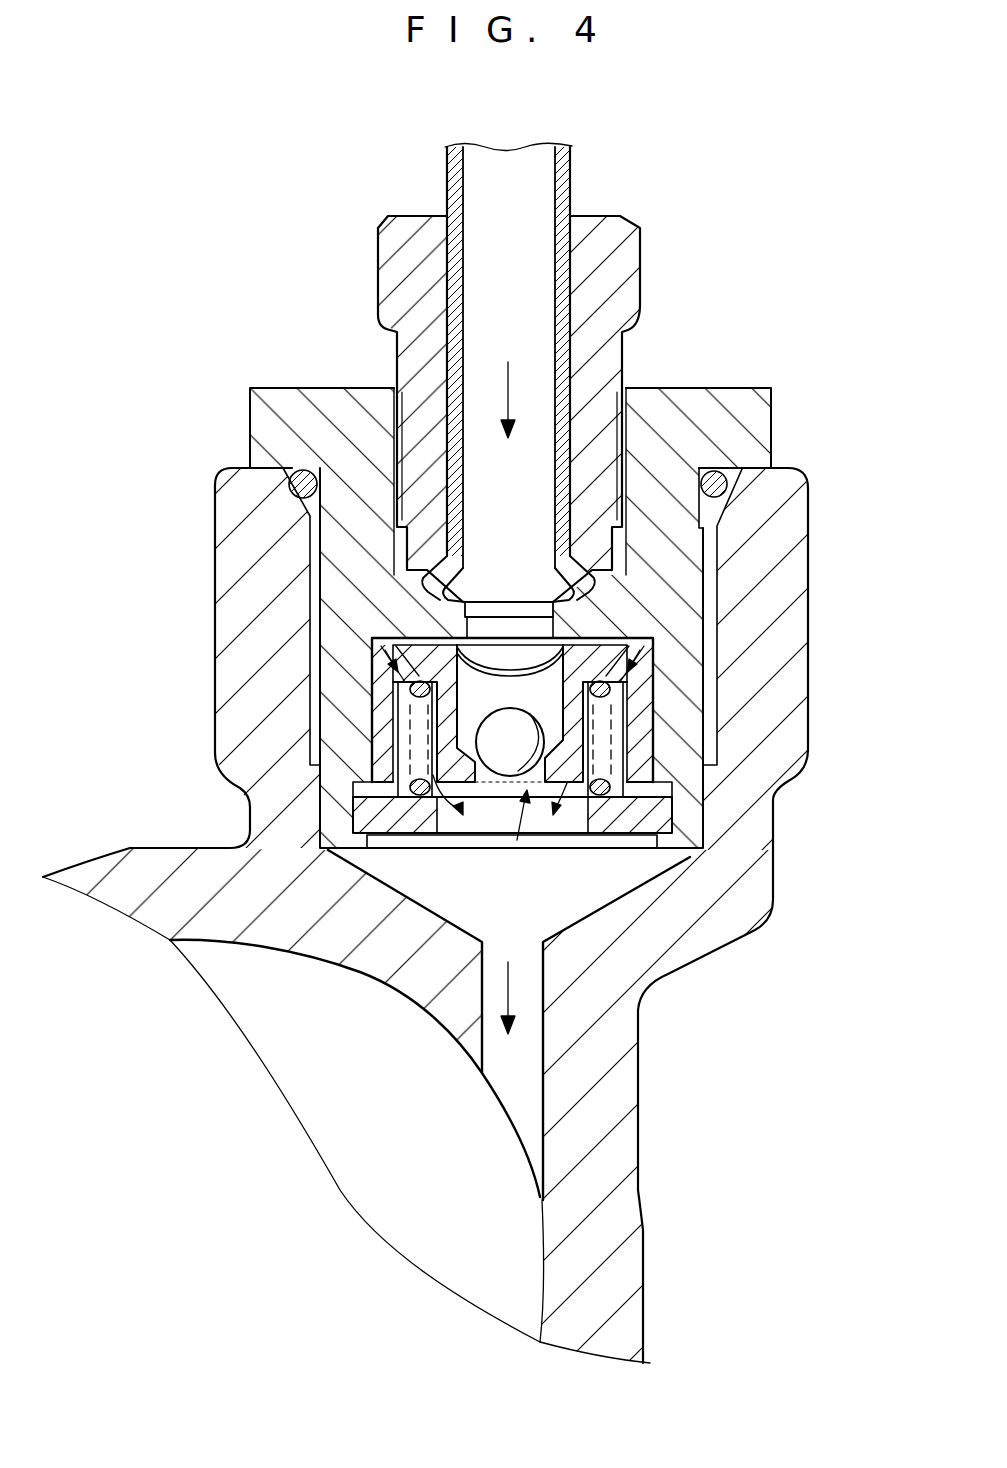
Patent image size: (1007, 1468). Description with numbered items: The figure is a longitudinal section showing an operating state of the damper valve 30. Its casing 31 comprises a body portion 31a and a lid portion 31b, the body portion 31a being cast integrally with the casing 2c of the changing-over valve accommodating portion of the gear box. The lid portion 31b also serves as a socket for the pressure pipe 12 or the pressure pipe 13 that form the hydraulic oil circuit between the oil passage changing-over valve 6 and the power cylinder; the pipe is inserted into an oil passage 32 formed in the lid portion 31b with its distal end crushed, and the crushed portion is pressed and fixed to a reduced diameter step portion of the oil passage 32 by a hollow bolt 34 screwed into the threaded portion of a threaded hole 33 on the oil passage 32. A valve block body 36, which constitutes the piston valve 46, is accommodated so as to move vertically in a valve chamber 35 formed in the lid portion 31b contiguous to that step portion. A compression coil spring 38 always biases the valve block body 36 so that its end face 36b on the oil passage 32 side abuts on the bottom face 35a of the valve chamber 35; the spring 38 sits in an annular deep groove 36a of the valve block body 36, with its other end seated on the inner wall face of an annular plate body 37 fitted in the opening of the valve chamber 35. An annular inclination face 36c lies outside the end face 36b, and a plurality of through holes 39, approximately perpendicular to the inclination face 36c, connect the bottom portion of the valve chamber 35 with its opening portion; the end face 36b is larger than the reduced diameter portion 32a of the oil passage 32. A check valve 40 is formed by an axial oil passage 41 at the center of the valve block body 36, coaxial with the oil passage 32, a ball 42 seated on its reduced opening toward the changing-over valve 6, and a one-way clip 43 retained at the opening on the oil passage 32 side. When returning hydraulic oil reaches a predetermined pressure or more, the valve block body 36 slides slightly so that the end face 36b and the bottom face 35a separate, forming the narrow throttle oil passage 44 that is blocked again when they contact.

The casing 2c is at (650, 1270).
The oil passage changing-over valve 6 is at (350, 1172).
The pressure pipe 12 is at (564, 385).
The pressure pipe 13 is at (564, 385).
The damper valve 30 is at (221, 234).
The casing 31 is at (808, 535).
The body portion 31a is at (718, 690).
The lid portion 31b is at (580, 579).
The oil passage 32 is at (530, 320).
The reduced diameter portion 32a is at (533, 630).
The threaded hole 33 is at (400, 413).
The hollow bolt 34 is at (523, 409).
The valve chamber 35 is at (374, 764).
The bottom face 35a is at (395, 655).
The valve block body 36 is at (497, 690).
The annular deep groove 36a is at (655, 782).
The end face 36b is at (378, 645).
The annular inclination face 36c is at (640, 652).
The annular plate body 37 is at (620, 835).
The compression coil spring 38 is at (673, 797).
The through holes 39 is at (408, 688).
The check valve 40 is at (533, 788).
The oil passage 41 is at (530, 712).
The ball 42 is at (497, 778).
The one-way clip 43 is at (560, 608).
The throttle oil passage 44 is at (462, 600).
The piston valve 46 is at (352, 722).